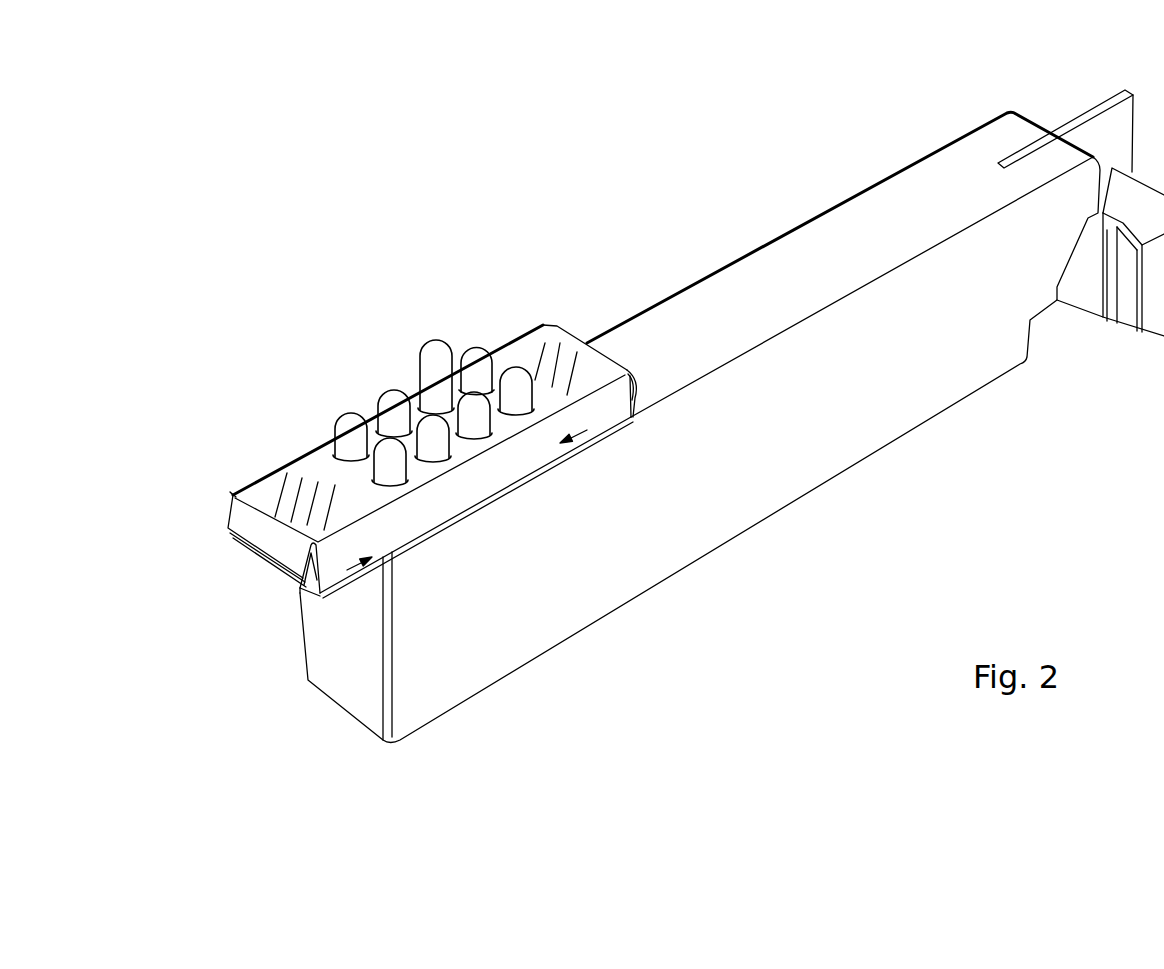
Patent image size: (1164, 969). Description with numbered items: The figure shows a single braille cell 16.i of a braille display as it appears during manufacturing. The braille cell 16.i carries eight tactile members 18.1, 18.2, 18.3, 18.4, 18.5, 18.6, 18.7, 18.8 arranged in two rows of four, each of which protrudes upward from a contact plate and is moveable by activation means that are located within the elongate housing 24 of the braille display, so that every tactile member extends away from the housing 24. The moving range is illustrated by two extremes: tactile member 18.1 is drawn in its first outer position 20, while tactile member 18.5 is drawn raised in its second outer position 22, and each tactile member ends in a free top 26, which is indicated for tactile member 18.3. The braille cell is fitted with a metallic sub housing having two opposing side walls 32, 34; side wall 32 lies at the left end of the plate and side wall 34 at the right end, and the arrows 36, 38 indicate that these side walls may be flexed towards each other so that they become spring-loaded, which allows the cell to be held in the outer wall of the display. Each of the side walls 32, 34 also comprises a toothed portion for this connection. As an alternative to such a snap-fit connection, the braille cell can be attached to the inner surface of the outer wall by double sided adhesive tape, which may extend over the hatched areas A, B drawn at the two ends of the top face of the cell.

The braille cell 16.i is at (615, 582).
The housing 24 is at (898, 403).
The side wall 32 is at (227, 517).
The side wall 34 is at (637, 382).
The arrow 36 is at (333, 577).
The arrow 38 is at (600, 423).
The first outer position 20 is at (347, 433).
The second outer position 22 is at (437, 342).
The free top 26 is at (393, 390).
The tactile member 18.1 is at (348, 420).
The tactile member 18.2 is at (392, 455).
The tactile member 18.3 is at (392, 402).
The tactile member 18.4 is at (433, 438).
The tactile member 18.5 is at (433, 348).
The tactile member 18.6 is at (474, 415).
The tactile member 18.7 is at (475, 357).
The tactile member 18.8 is at (517, 388).
The area A is at (292, 493).
The area B is at (545, 357).